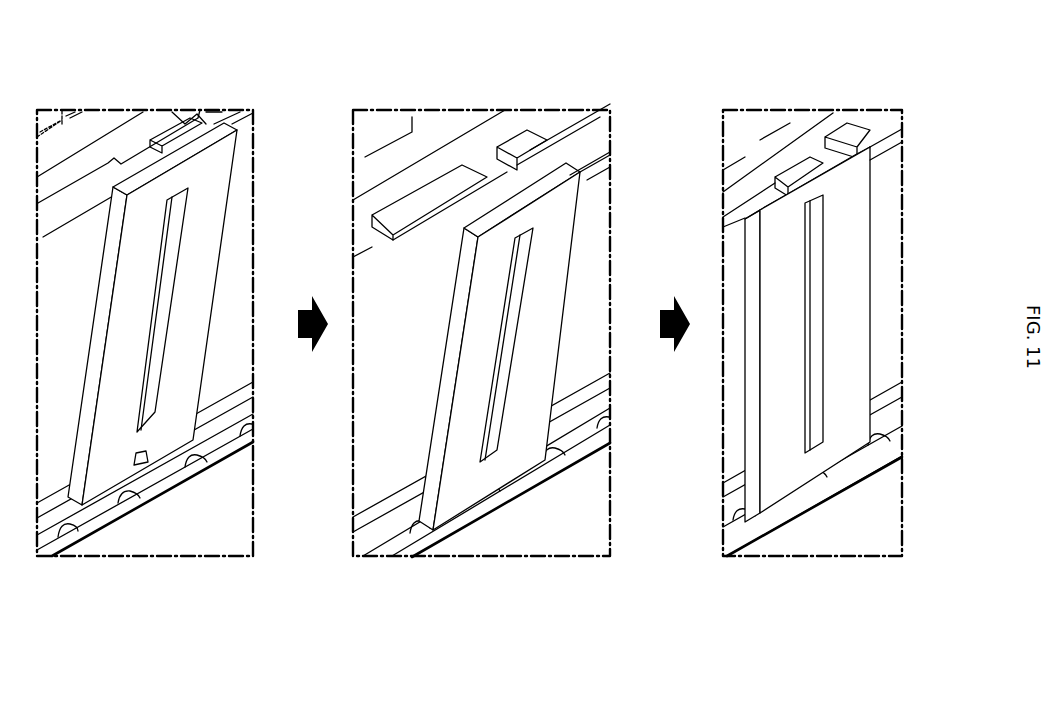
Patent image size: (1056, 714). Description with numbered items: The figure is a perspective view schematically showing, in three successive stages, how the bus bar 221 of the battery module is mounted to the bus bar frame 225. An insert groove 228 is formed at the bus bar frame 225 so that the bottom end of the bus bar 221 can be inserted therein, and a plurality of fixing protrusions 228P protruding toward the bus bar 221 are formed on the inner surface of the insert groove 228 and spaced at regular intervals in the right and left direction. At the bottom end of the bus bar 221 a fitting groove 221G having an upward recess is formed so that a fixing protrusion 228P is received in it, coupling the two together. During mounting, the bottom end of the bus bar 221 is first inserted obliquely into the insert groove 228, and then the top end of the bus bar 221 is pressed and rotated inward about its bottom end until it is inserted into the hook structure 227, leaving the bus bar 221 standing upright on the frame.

The bus bar 221 is at (203, 231).
The fitting groove 221G is at (143, 457).
The bus bar frame 225 is at (112, 110).
The hook structure 227 is at (440, 193).
The insert groove 228 is at (247, 422).
The fixing protrusion 228P is at (87, 503).